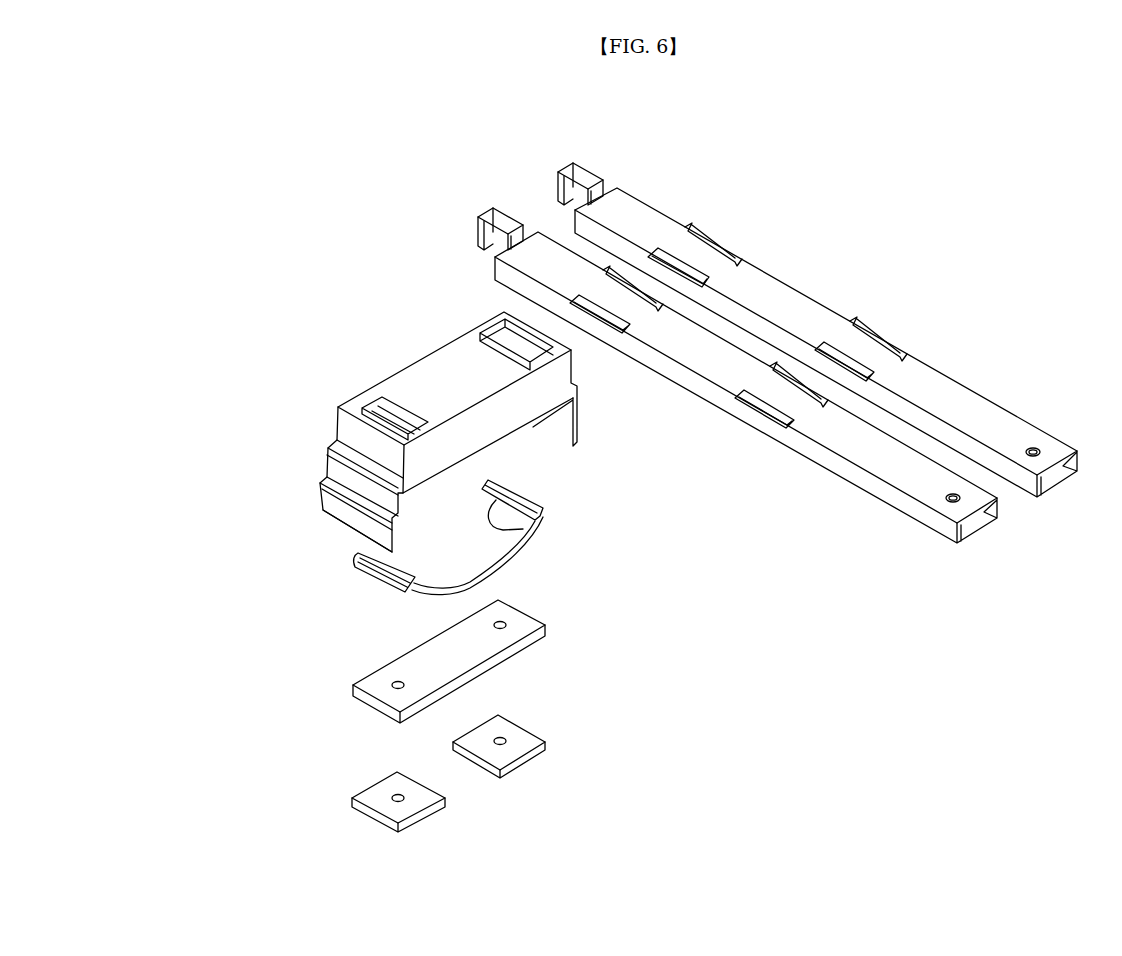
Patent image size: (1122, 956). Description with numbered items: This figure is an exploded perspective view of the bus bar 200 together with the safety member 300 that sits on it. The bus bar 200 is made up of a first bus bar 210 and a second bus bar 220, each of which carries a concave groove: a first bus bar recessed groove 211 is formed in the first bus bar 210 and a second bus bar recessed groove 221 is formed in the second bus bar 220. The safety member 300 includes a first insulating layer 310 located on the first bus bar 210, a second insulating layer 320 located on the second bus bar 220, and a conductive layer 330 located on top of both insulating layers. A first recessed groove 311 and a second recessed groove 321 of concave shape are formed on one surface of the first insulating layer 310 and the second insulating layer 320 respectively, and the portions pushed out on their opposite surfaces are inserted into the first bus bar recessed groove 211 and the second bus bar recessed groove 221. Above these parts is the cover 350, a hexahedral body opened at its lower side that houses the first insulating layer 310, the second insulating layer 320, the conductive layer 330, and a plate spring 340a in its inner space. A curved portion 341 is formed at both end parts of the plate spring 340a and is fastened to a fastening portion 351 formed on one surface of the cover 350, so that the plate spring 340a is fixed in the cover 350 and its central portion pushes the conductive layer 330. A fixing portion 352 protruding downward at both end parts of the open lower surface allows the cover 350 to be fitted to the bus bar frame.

The bus bar 200 is at (1068, 243).
The first bus bar 210 is at (997, 423).
The first bus bar recessed groove 211 is at (1033, 448).
The second bus bar 220 is at (890, 457).
The second bus bar recessed groove 221 is at (953, 496).
The safety member 300 is at (210, 560).
The first insulating layer 310 is at (458, 740).
The first recessed groove 311 is at (500, 738).
The second insulating layer 320 is at (367, 793).
The second recessed groove 321 is at (403, 796).
The conductive layer 330 is at (365, 680).
The plate spring 340a is at (357, 567).
The curved portion 341 is at (478, 585).
The cover 350 is at (345, 427).
The fastening portion 351 is at (507, 328).
The fixing portion 352 is at (398, 540).